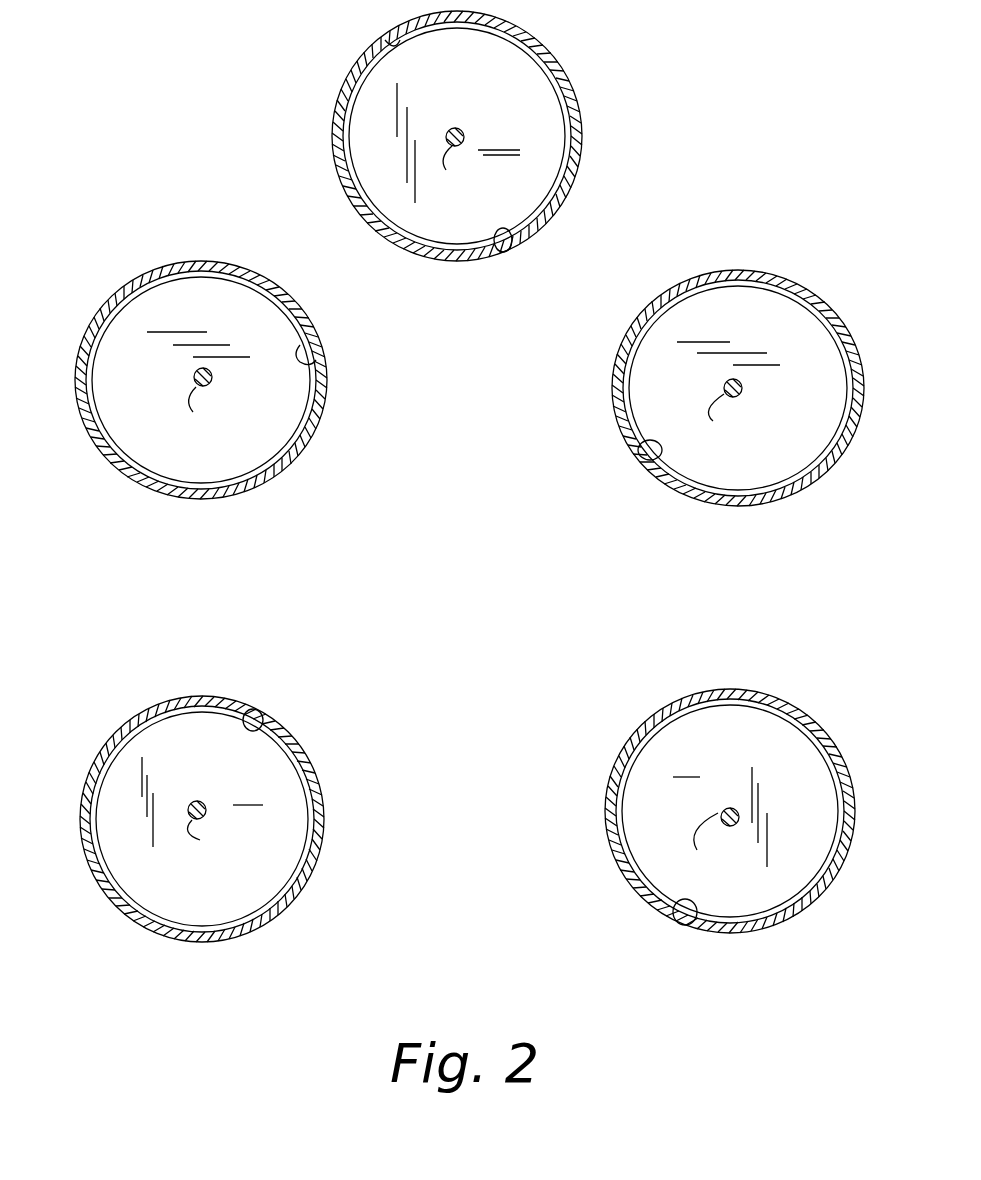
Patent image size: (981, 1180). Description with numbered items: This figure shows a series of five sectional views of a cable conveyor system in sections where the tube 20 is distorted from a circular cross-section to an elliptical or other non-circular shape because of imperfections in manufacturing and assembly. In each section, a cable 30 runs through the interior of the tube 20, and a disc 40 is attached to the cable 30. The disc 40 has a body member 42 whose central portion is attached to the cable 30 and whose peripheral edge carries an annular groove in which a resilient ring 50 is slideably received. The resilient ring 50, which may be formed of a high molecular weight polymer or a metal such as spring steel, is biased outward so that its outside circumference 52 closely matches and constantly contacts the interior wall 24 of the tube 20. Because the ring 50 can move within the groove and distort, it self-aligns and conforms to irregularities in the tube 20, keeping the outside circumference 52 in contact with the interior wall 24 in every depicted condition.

The tube 20 is at (585, 116).
The interior wall 24 is at (392, 48).
The cable 30 is at (468, 497).
The disc 40 is at (548, 173).
The body member 42 is at (461, 475).
The resilient ring 50 is at (520, 40).
The outside circumference 52 is at (505, 36).